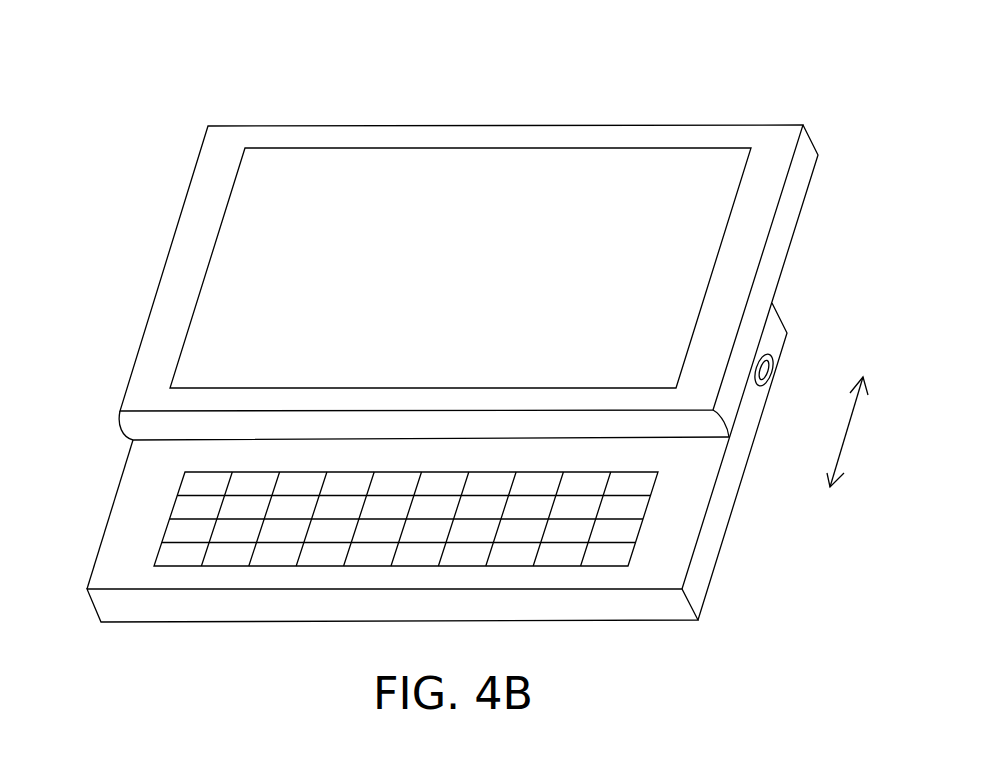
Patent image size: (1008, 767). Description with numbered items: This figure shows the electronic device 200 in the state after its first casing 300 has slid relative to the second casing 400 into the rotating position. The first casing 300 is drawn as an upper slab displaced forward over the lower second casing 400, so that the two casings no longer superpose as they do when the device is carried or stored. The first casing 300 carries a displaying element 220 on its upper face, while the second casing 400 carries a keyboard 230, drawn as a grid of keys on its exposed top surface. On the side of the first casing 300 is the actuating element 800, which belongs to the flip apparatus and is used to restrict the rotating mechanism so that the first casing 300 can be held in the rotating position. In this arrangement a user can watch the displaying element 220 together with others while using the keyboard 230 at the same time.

The electronic device 200 is at (734, 73).
The first casing 300 is at (475, 138).
The displaying element 220 is at (253, 237).
The second casing 400 is at (722, 511).
The keyboard 230 is at (629, 499).
The actuating element 800 is at (783, 353).